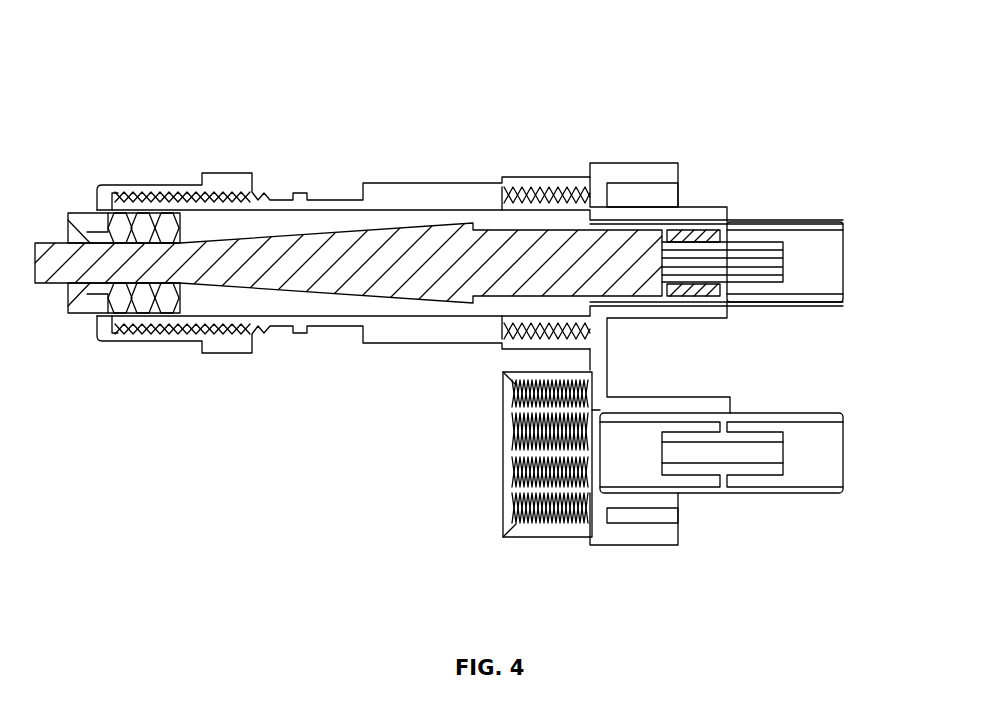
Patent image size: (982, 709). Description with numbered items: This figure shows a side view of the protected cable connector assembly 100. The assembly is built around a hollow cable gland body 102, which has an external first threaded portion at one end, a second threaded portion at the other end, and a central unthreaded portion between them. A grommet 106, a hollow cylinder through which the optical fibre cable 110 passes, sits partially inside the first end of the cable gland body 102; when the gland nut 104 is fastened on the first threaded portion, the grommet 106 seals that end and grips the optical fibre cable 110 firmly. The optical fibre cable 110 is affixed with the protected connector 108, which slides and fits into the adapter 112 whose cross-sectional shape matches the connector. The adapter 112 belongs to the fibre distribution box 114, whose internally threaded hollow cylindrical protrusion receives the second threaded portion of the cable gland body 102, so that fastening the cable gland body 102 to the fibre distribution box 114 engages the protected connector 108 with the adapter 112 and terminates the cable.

The protected cable connector assembly 100 is at (471, 273).
The cable gland body 102 is at (374, 197).
The gland nut 104 is at (227, 187).
The grommet 106 is at (95, 292).
The protected connector 108 is at (635, 245).
The optical fibre cable 110 is at (163, 262).
The adapter 112 is at (766, 258).
The fibre distribution box 114 is at (722, 212).